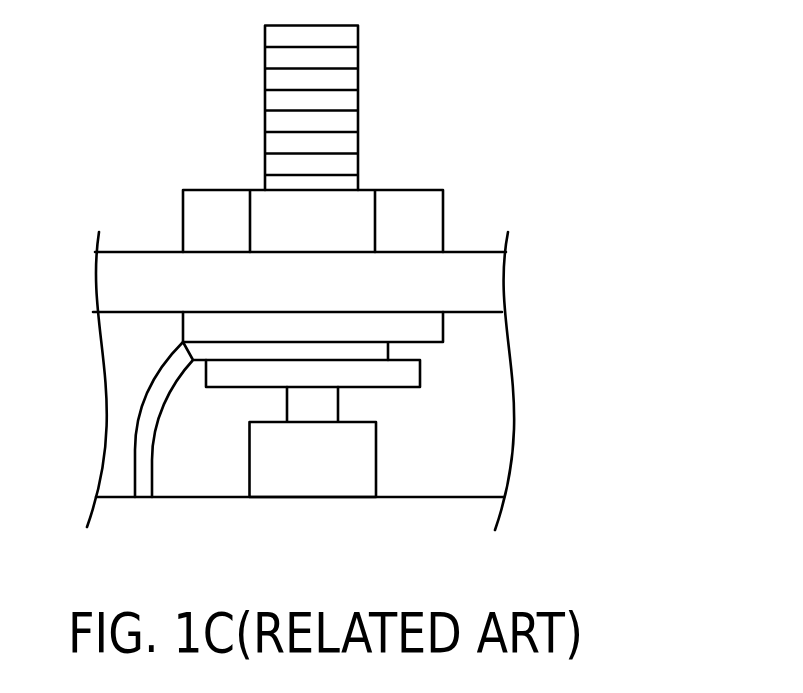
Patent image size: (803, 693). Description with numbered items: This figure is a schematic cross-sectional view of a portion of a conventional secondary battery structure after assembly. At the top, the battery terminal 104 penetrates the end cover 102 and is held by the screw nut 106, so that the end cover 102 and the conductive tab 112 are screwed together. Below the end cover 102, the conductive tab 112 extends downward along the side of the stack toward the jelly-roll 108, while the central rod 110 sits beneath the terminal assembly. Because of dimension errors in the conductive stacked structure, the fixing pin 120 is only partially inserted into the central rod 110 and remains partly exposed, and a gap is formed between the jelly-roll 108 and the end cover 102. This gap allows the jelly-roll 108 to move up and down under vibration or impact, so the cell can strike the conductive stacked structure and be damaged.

The end cover 102 is at (483, 285).
The battery terminal 104 is at (352, 82).
The screw nut 106 is at (192, 208).
The jelly-roll 108 is at (488, 515).
The central rod 110 is at (362, 468).
The conductive tab 112 is at (145, 433).
The fixing pin 120 is at (328, 404).